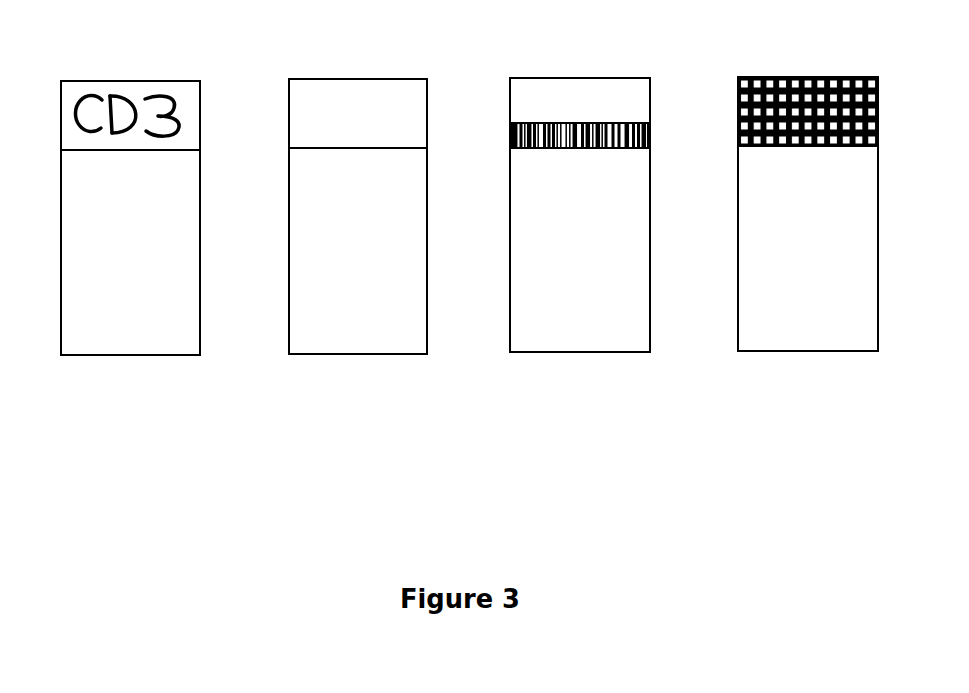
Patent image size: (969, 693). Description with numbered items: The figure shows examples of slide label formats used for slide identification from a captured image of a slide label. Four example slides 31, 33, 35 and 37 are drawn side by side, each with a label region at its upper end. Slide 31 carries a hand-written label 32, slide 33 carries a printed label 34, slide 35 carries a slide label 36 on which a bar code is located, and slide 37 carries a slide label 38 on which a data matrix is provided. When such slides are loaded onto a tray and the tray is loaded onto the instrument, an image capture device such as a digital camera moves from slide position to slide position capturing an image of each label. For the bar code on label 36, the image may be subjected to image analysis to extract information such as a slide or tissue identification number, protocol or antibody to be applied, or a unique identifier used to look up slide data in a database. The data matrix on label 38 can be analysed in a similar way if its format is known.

The slide 31 is at (78, 226).
The slide label 32 is at (103, 81).
The slide 33 is at (305, 226).
The slide label 34 is at (328, 79).
The slide 35 is at (525, 226).
The slide label 36 is at (548, 78).
The slide 37 is at (757, 226).
The slide label 38 is at (765, 77).